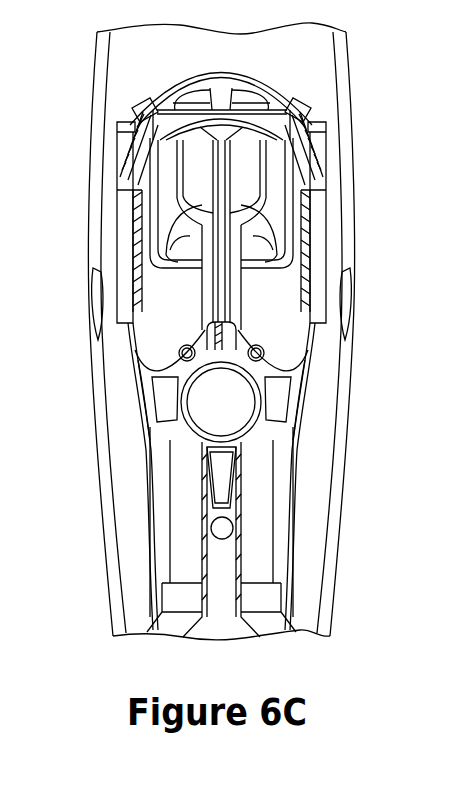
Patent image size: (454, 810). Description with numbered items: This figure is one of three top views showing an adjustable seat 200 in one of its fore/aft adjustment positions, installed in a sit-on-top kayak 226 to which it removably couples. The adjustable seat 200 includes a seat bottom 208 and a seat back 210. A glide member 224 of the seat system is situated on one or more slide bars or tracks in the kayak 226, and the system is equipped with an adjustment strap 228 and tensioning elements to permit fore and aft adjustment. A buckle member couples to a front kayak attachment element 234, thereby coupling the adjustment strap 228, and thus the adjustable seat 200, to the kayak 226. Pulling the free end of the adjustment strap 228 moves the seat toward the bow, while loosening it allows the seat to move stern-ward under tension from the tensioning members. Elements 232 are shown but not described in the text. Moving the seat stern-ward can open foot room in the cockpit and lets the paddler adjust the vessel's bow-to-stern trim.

The adjustable seat 200 is at (113, 267).
The sit-on-top kayak 226 is at (82, 87).
The seat back 210 is at (290, 95).
The support struts 232 is at (145, 158).
The glide member 224 is at (128, 230).
The seat bottom 208 is at (253, 227).
The adjustment strap 228 is at (233, 297).
The front kayak attachment element 234 is at (223, 340).